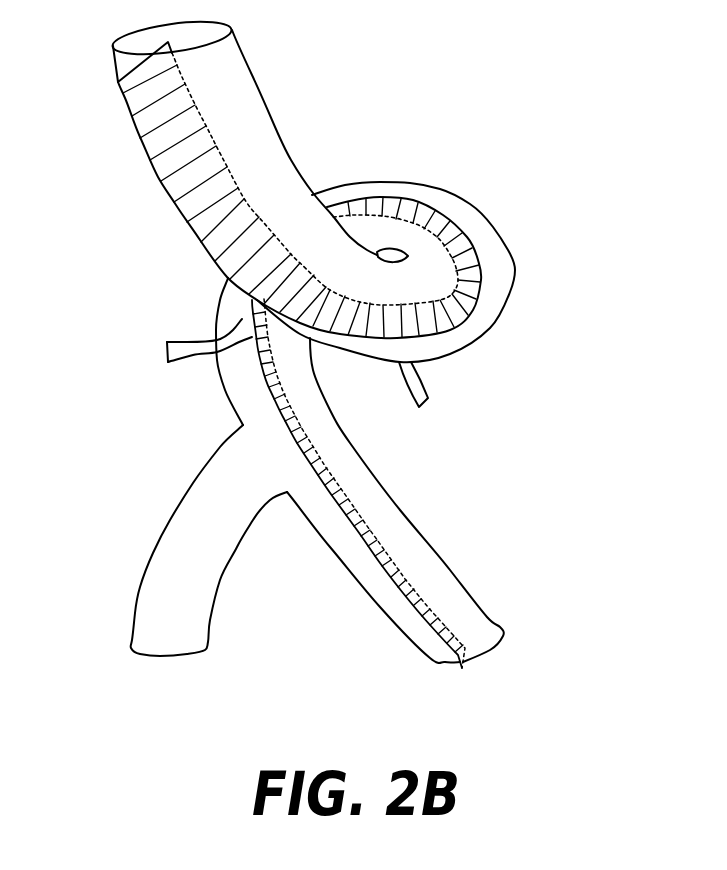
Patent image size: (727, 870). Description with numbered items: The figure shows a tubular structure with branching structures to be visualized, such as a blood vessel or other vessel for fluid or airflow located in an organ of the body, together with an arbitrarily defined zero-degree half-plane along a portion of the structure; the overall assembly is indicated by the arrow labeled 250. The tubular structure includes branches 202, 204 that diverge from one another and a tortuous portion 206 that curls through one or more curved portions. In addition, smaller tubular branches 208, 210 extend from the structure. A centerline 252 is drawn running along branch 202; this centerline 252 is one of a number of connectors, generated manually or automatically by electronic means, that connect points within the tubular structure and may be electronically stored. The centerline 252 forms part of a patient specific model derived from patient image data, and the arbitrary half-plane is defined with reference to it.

The branch 202 is at (480, 623).
The branch 204 is at (157, 615).
The tortuous portion 206 is at (500, 228).
The smaller tubular branch 208 is at (165, 360).
The smaller tubular branch 210 is at (430, 393).
The vascular system / assembly 250 is at (574, 300).
The centerline 252 is at (380, 540).